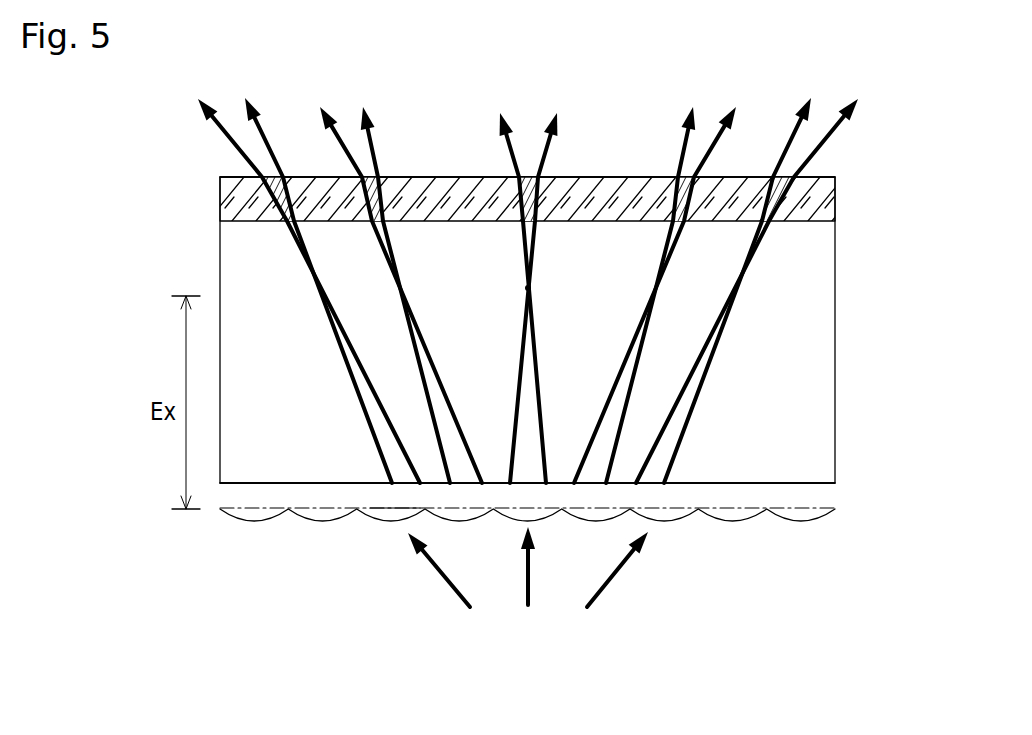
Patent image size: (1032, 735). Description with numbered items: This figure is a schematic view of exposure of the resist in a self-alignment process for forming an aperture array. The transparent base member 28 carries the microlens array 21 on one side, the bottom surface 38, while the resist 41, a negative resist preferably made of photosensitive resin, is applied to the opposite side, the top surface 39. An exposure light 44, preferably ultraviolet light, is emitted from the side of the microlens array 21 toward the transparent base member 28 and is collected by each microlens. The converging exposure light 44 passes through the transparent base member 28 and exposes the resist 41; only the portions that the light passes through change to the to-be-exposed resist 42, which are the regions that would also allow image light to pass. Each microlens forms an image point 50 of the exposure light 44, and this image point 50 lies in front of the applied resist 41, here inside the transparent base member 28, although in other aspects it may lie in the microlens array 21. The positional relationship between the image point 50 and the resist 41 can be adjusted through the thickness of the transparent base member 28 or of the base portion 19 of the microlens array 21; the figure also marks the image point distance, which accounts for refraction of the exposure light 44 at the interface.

The base portion 19 is at (396, 505).
The microlens array 21 is at (858, 483).
The transparent base member 28 is at (858, 221).
The bottom surface 38 is at (258, 486).
The top surface 39 is at (250, 218).
The resist 41 is at (832, 200).
The to-be-exposed resist 42 is at (273, 188).
The exposure light 44 is at (503, 150).
The image point 50 is at (523, 290).